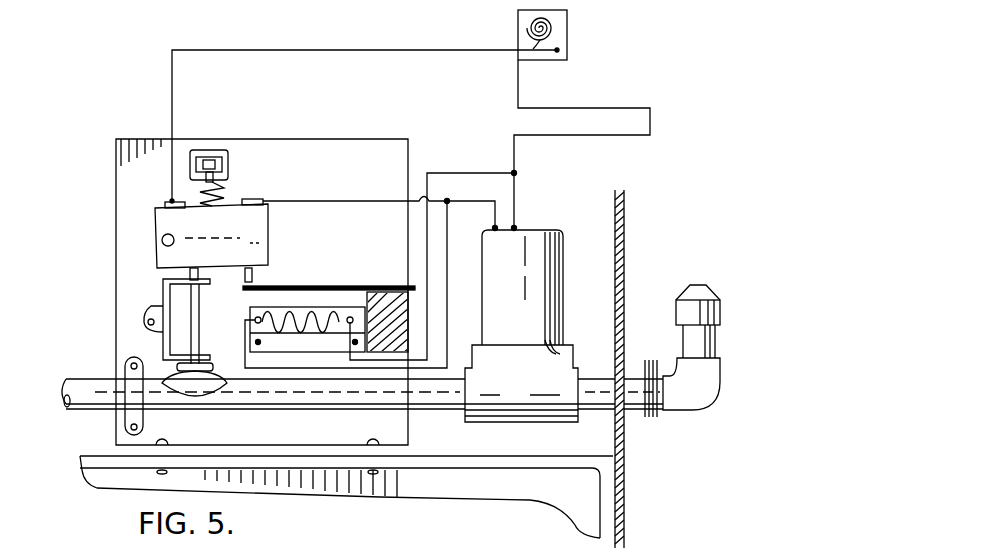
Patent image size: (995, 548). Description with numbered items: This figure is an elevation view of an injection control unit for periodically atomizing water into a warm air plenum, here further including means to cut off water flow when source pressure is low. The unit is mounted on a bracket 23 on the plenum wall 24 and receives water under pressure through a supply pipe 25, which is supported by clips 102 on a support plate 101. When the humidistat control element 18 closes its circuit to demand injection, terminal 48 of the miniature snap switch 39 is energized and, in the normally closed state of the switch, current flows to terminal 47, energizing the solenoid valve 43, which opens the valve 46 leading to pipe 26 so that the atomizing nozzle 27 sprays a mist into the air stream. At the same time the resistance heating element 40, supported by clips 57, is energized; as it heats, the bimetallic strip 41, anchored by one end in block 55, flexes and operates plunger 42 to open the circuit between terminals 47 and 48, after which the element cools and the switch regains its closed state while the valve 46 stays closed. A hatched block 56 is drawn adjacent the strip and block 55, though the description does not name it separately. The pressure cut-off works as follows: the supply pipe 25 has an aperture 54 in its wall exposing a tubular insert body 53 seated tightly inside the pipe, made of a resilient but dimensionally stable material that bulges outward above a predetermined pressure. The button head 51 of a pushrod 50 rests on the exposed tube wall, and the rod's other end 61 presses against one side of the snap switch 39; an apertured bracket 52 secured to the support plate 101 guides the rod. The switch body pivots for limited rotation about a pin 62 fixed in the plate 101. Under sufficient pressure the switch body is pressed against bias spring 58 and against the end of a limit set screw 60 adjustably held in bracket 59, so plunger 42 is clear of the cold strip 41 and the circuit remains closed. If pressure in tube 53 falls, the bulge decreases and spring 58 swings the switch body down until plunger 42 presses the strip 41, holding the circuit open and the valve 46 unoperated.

The humidistat control element 18 is at (558, 42).
The bracket 23 is at (530, 488).
The plenum wall 24 is at (625, 286).
The supply pipe 25 is at (70, 386).
The pipe 26 is at (603, 378).
The atomizing nozzle 27 is at (677, 313).
The snap switch 39 is at (268, 222).
The resistance heating element 40 is at (315, 329).
The bimetallic strip 41 is at (330, 287).
The plunger 42 is at (255, 277).
The solenoid valve 43 is at (560, 301).
The valve 46 is at (505, 419).
The terminal 47 is at (165, 206).
The terminal 48 is at (258, 200).
The pushrod 50 is at (199, 336).
The button head 51 is at (213, 367).
The apertured bracket 52 is at (163, 300).
The tubular insert body 53 is at (225, 395).
The aperture 54 is at (173, 383).
The block 55 is at (406, 311).
The core block 56 is at (383, 292).
The clips 57 is at (338, 354).
The bias spring 58 is at (200, 189).
The bracket 59 is at (226, 190).
The limit set screw 60 is at (207, 150).
The end of pushrod 61 is at (188, 276).
The pin 62 is at (161, 240).
The support plate 101 is at (406, 141).
The clips 102 is at (130, 373).